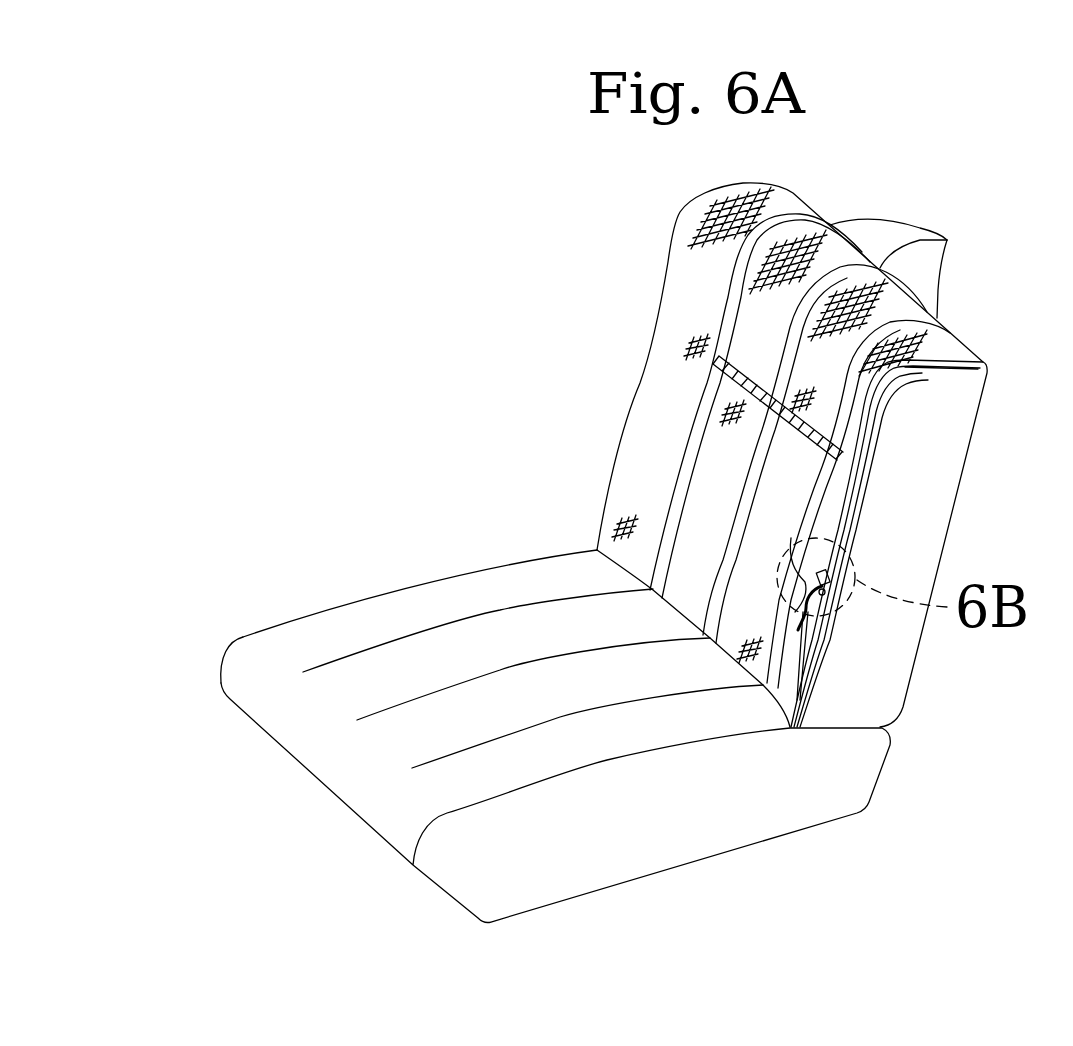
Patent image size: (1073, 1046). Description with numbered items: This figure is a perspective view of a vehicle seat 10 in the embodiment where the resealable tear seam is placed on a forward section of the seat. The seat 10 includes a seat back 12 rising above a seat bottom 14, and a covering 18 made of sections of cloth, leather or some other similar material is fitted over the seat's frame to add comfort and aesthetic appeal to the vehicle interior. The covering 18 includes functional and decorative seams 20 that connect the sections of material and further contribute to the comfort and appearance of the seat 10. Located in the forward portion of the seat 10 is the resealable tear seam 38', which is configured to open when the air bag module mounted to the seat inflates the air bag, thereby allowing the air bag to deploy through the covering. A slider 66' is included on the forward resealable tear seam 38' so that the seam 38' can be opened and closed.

The vehicle seat 10 is at (990, 433).
The seat back 12 is at (802, 455).
The seat bottom 14 is at (638, 813).
The covering 18 is at (753, 333).
The seams 20 is at (947, 240).
The resealable tear seam 38' is at (857, 536).
The slider 66' is at (885, 584).